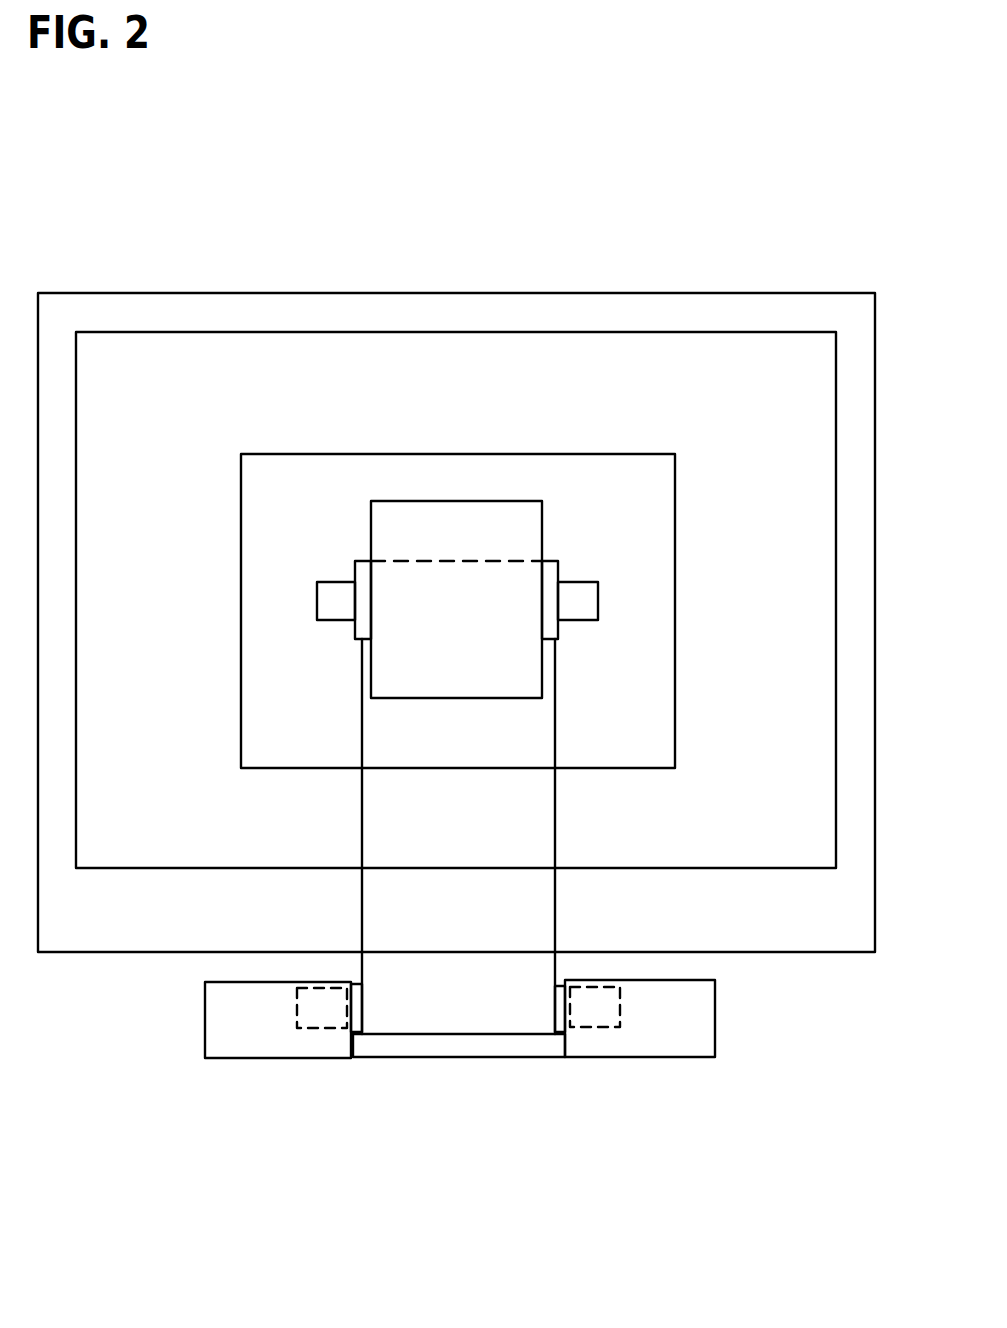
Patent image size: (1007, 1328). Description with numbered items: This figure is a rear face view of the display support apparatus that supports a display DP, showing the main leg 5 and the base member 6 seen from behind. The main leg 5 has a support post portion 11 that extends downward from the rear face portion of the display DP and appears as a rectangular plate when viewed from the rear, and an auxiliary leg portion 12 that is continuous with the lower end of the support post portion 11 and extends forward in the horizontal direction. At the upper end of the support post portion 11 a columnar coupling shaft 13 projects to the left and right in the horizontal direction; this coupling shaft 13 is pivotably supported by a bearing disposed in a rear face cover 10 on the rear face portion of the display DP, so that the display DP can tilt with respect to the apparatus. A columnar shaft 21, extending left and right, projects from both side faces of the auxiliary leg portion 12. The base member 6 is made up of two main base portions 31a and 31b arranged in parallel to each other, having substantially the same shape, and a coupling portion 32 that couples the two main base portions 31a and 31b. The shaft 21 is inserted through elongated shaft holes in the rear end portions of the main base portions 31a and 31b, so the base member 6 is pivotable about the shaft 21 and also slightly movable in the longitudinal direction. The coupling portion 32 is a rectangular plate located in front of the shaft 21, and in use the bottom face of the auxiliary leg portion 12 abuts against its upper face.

The rear face cover 10 is at (262, 380).
The display DP is at (400, 293).
The coupling shaft 13 is at (580, 593).
The main leg 5 is at (458, 883).
The support post portion 11 is at (460, 960).
The auxiliary leg portion 12 is at (407, 1017).
The base member 6 is at (471, 1104).
The main base portion 31a is at (705, 1022).
The main base portion 31b is at (205, 1030).
The coupling portion 32 is at (372, 1048).
The shaft 21 is at (310, 1028).